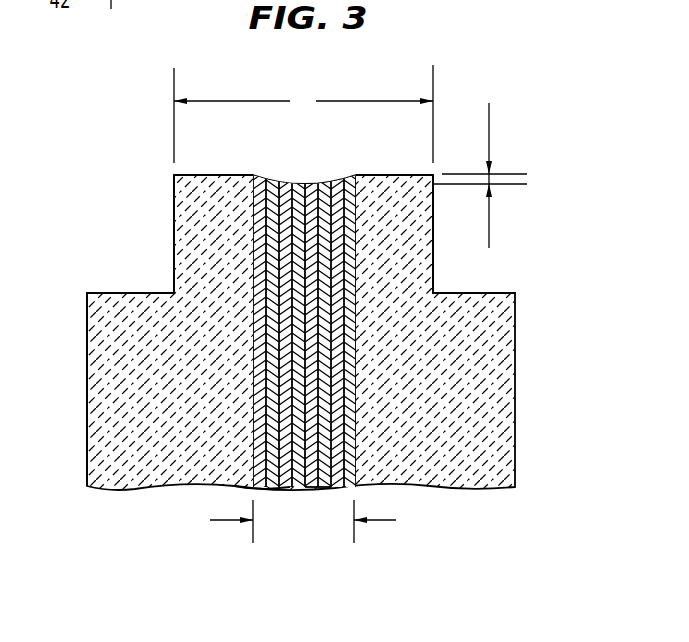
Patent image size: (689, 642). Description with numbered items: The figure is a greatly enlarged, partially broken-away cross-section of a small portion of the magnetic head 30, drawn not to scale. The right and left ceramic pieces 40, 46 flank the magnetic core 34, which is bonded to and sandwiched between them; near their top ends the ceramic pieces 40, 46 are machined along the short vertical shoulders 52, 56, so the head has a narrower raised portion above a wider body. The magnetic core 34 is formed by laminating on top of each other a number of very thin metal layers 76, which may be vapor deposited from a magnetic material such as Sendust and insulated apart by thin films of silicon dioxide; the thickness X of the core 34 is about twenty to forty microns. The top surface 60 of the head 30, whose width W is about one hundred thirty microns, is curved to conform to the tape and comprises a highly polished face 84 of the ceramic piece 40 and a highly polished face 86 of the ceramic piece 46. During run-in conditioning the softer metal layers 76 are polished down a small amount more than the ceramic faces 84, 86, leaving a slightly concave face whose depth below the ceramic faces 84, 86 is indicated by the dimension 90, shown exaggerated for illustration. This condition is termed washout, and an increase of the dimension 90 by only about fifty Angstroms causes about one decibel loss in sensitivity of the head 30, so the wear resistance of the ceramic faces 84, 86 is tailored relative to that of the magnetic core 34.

The magnetic head 30 is at (588, 228).
The magnetic core 34 is at (288, 489).
The ceramic piece 40 is at (498, 327).
The ceramic piece 46 is at (118, 417).
The short vertical shoulder 52 is at (433, 223).
The short vertical shoulder 56 is at (174, 252).
The top surface 60 is at (226, 170).
The metal layers 76 is at (313, 482).
The polished face of ceramic piece 40 84 is at (394, 175).
The polished face of ceramic piece 46 86 is at (200, 175).
The dimension 90 is at (492, 178).